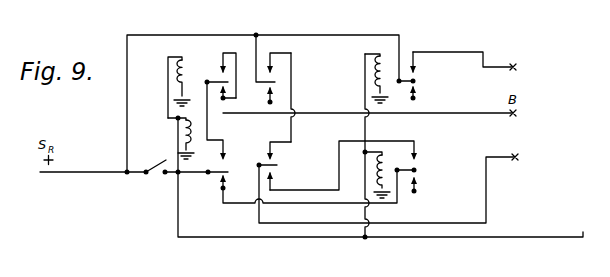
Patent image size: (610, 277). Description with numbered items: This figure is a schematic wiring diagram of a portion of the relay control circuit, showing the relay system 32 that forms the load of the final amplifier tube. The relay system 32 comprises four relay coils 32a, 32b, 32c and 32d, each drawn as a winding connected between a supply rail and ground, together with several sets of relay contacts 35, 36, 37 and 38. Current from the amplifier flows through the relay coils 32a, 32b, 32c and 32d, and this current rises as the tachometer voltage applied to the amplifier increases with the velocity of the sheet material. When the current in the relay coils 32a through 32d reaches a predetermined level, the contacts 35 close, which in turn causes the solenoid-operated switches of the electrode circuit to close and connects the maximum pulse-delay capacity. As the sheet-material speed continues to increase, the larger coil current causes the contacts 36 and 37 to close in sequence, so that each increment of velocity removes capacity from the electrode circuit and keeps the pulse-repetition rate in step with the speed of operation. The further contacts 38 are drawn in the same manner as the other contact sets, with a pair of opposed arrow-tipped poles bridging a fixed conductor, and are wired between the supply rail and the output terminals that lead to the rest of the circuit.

The relay system 32 is at (211, 31).
The relay coil 32a is at (373, 70).
The relay coil 32b is at (377, 168).
The relay coil 32c is at (174, 137).
The relay coil 32d is at (186, 72).
The contacts 35 is at (420, 73).
The contacts 36 is at (424, 175).
The contacts 37 is at (363, 152).
The relay contact 38 is at (250, 97).